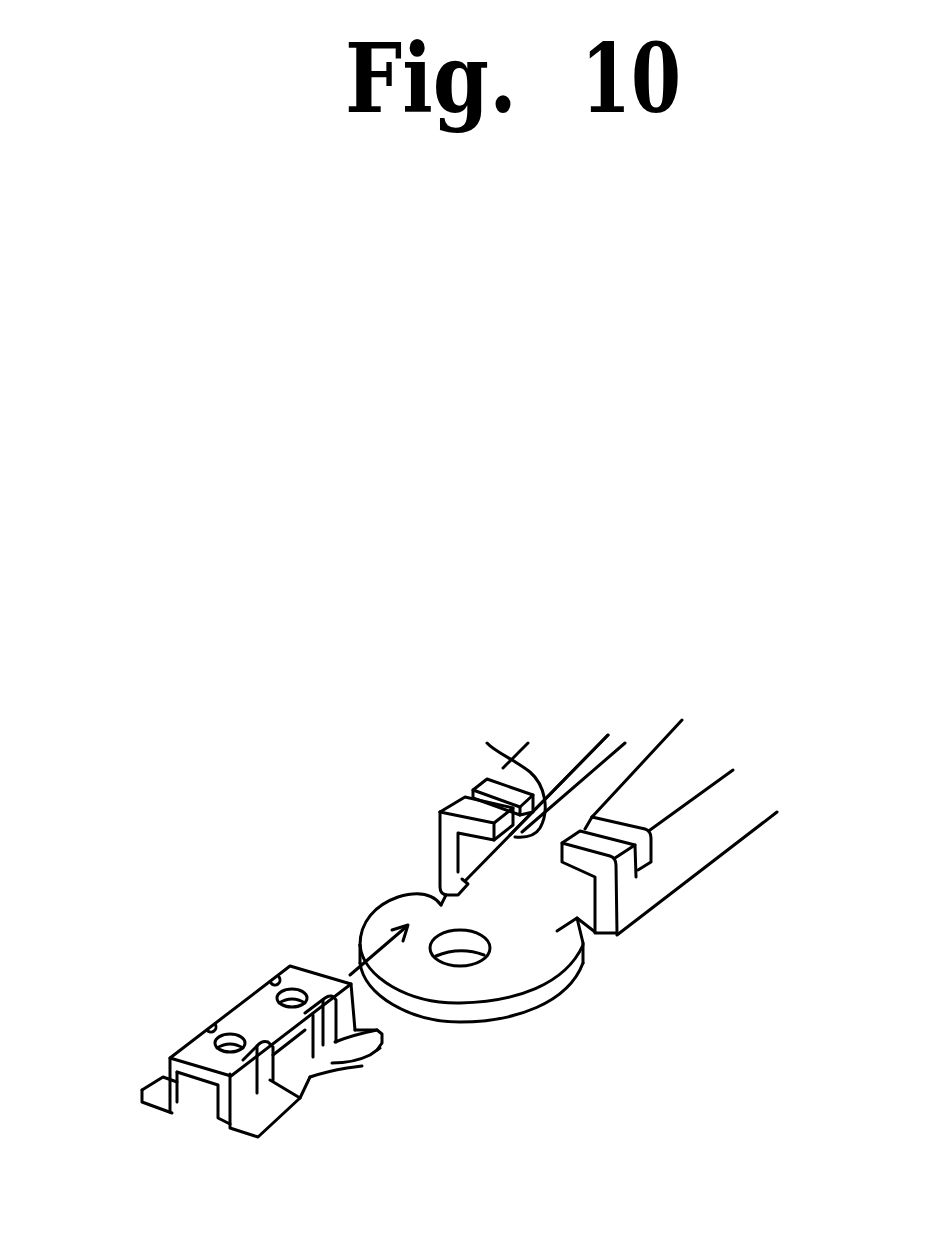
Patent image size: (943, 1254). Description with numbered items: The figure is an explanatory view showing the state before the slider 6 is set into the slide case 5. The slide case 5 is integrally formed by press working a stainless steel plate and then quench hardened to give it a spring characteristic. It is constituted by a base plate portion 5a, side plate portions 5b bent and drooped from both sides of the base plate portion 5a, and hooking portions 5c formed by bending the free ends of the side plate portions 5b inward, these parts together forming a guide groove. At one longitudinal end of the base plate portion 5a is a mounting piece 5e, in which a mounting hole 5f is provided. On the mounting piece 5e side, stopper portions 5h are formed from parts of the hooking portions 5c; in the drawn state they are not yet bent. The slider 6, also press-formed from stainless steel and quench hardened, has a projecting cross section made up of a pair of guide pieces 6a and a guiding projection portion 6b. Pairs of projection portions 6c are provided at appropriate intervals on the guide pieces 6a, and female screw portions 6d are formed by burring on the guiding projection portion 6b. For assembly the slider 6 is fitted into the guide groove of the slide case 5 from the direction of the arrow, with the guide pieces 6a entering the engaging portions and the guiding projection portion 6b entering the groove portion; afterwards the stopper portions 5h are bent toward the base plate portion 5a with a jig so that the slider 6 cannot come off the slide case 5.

The slide case 5 is at (712, 860).
The base plate portion 5a is at (595, 934).
The side plate portions 5b is at (445, 857).
The hooking portions 5c is at (547, 757).
The mounting piece 5e is at (523, 965).
The mounting hole 5f is at (477, 960).
The stopper portions 5h is at (487, 743).
The slider 6 is at (197, 1118).
The guide pieces 6a is at (157, 1088).
The guiding projection portion 6b is at (253, 1017).
The projection portions 6c is at (327, 1060).
The female screw portions 6d is at (297, 997).